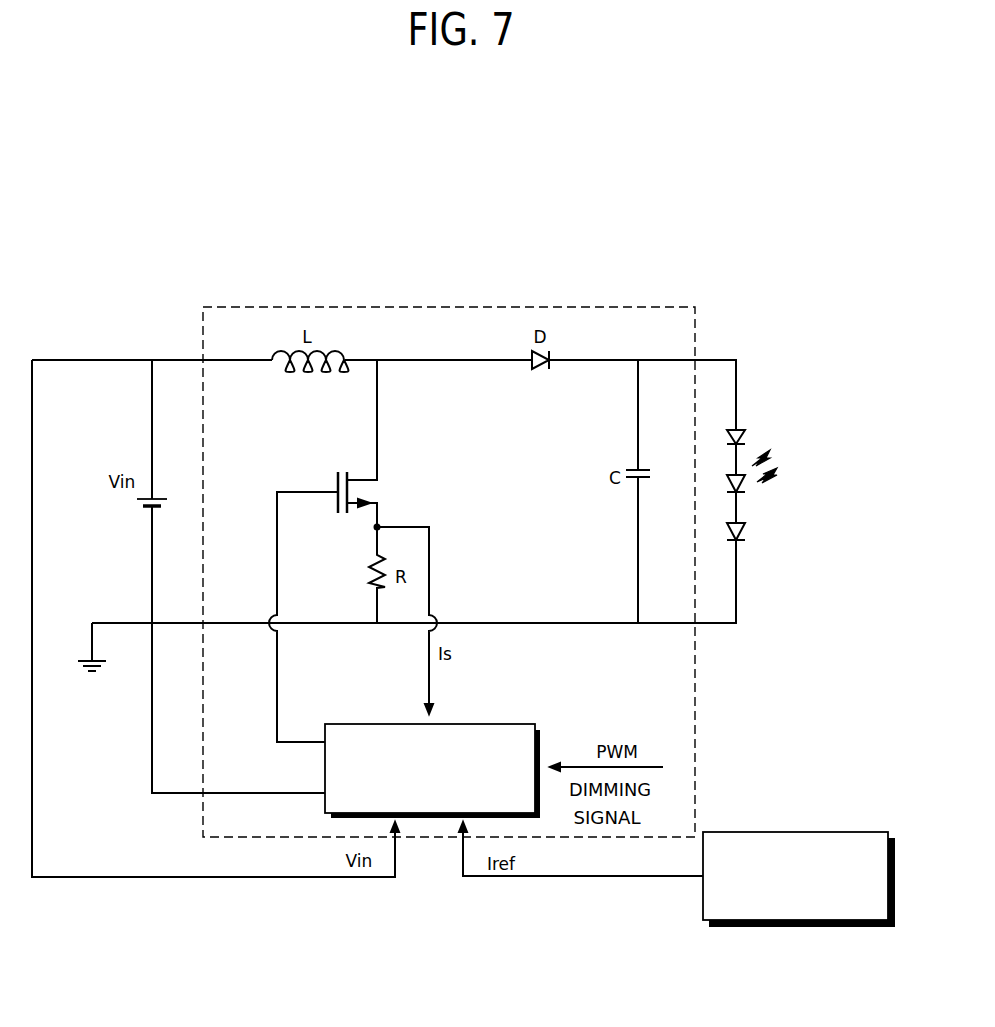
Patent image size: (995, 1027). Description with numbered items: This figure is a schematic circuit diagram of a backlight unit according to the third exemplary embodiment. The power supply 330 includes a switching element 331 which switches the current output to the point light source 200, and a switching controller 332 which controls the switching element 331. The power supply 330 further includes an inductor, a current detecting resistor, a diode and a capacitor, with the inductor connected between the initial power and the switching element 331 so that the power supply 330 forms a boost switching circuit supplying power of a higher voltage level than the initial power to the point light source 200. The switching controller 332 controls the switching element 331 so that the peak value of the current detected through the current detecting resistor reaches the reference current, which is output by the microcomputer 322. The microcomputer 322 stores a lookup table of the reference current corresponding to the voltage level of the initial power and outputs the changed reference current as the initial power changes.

The power supply 330 is at (423, 306).
The switching element 331 is at (334, 475).
The switching controller 332 is at (505, 723).
The point light source 200 is at (740, 426).
The microcomputer 322 is at (795, 929).